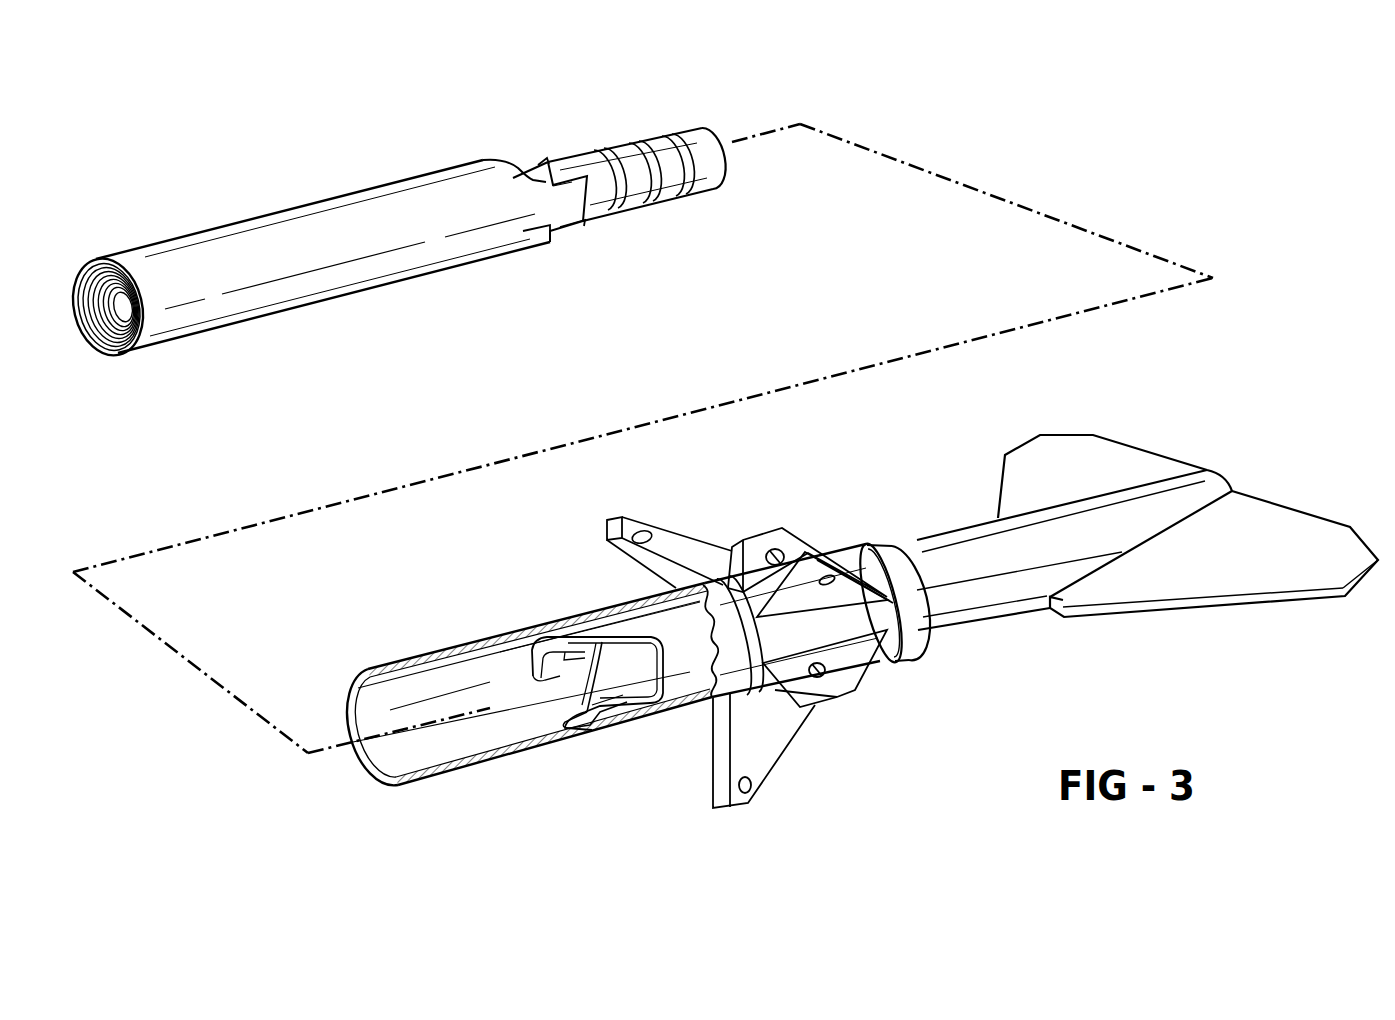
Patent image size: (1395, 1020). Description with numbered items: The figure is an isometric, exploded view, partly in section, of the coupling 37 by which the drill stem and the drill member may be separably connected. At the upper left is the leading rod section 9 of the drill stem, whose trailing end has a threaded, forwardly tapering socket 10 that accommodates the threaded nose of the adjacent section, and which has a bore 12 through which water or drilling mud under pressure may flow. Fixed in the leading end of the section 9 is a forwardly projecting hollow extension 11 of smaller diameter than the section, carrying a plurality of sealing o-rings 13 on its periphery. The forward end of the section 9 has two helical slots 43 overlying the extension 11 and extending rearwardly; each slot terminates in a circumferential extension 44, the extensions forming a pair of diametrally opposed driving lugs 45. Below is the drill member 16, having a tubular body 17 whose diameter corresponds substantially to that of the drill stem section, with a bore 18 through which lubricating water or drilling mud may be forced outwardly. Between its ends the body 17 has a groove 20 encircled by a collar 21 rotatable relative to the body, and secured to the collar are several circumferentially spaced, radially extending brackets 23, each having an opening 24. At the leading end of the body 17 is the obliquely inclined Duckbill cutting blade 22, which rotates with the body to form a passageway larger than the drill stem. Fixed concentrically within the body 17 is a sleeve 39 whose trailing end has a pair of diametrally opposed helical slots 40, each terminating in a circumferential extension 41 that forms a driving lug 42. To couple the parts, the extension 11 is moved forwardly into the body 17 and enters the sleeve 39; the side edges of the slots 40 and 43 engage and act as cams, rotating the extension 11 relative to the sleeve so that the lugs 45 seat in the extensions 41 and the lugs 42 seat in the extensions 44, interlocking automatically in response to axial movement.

The rod section 9 is at (318, 205).
The socket 10 is at (88, 268).
The hollow extension 11 is at (680, 140).
The bore 12 is at (112, 354).
The sealing o-rings 13 is at (643, 208).
The drill member 16 is at (663, 777).
The tubular body 17 is at (425, 660).
The bore 18 is at (385, 750).
The groove 20 is at (893, 553).
The collar 21 is at (887, 622).
The cutting blade 22 is at (1102, 451).
The brackets 23 is at (703, 543).
The opening 24 is at (647, 532).
The coupling 37 is at (158, 659).
The sleeve 39 is at (694, 646).
The helical slots 40 is at (613, 637).
The circumferential extension 41 is at (602, 652).
The driving lugs 42 is at (550, 672).
The helical slots 43 is at (512, 176).
The circumferential extension 44 is at (537, 238).
The driving lugs 45 is at (530, 162).